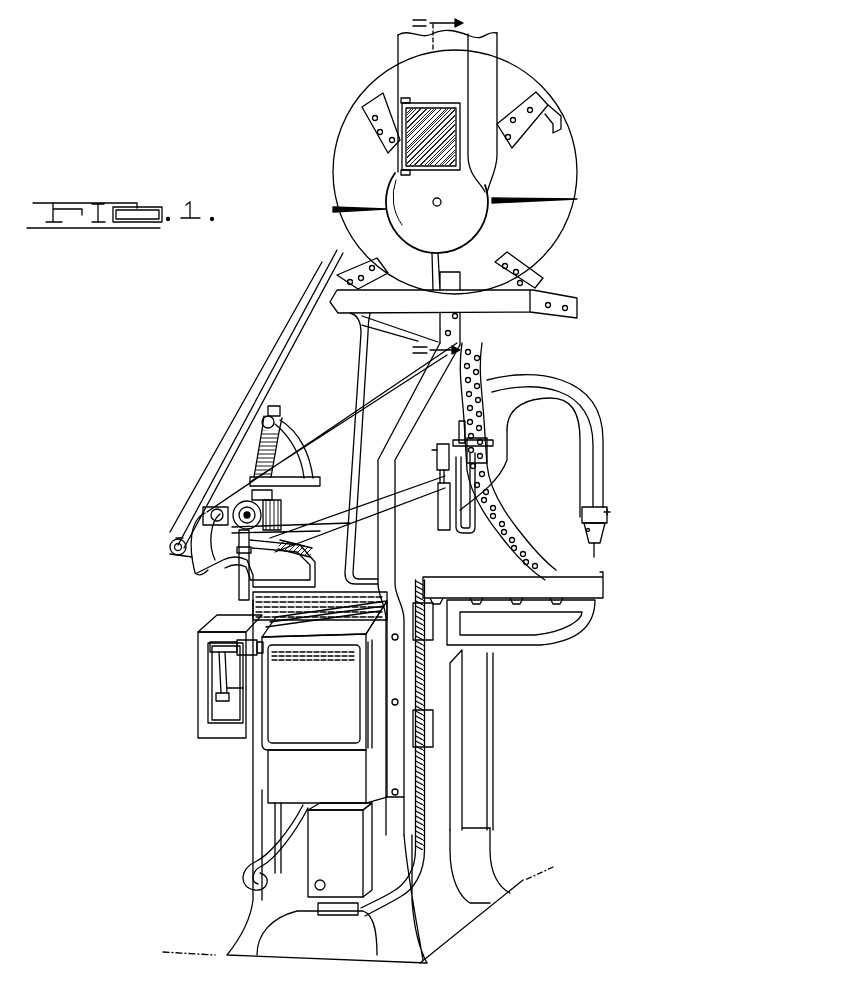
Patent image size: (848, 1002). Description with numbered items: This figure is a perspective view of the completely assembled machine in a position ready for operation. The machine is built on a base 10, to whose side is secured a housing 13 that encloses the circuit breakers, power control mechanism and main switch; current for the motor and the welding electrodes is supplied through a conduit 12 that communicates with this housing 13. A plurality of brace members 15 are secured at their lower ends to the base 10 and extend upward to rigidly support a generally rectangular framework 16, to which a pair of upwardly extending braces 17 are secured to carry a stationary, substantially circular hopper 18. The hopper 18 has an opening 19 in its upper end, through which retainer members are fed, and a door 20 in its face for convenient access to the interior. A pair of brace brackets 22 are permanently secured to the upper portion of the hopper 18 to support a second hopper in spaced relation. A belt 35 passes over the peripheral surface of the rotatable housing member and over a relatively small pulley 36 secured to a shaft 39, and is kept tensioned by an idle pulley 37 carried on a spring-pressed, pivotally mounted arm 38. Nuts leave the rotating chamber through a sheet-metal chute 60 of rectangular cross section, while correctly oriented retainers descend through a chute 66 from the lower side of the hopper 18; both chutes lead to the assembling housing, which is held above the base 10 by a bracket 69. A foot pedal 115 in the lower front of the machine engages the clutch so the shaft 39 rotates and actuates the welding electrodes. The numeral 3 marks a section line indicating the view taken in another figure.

The section line 3- 3 is at (431, 188).
The base 10 is at (455, 886).
The conduit 12 is at (208, 650).
The housing 13 is at (315, 758).
The brace members 15 is at (490, 728).
The rectangular framework 16 is at (563, 294).
The braces 17 is at (518, 266).
The hopper 18 is at (560, 164).
The opening 19 is at (496, 38).
The door 20 is at (432, 120).
The brace brackets 22 is at (535, 100).
The belt 35 is at (242, 425).
The pulley 36 is at (175, 536).
The idle pulley 37 is at (212, 507).
The arm 38 is at (199, 577).
The shaft 39 is at (188, 548).
The chute 60 is at (490, 376).
The chute 66 is at (483, 366).
The bracket 69 is at (458, 432).
The foot pedal 115 is at (480, 912).